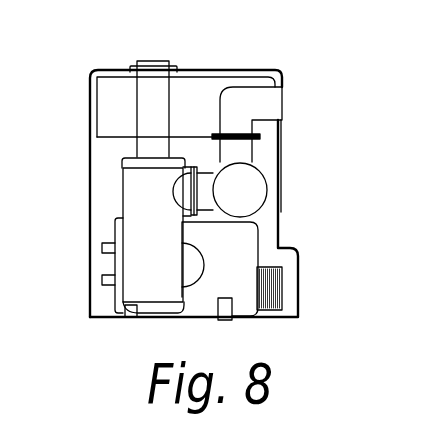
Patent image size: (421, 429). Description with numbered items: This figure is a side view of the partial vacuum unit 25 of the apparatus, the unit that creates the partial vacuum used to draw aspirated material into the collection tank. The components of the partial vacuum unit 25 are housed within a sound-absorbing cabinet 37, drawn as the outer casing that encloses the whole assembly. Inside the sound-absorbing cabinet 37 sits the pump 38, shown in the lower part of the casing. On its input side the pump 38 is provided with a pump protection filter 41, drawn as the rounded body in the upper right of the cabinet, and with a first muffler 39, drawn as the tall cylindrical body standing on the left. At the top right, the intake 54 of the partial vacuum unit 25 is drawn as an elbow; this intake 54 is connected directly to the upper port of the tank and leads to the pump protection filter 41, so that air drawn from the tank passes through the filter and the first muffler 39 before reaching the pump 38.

The partial vacuum unit 25 is at (204, 56).
The sound-absorbing cabinet 37 is at (88, 125).
The pump 38 is at (237, 252).
The first muffler 39 is at (140, 193).
The pump protection filter 41 is at (250, 197).
The intake 54 is at (278, 105).